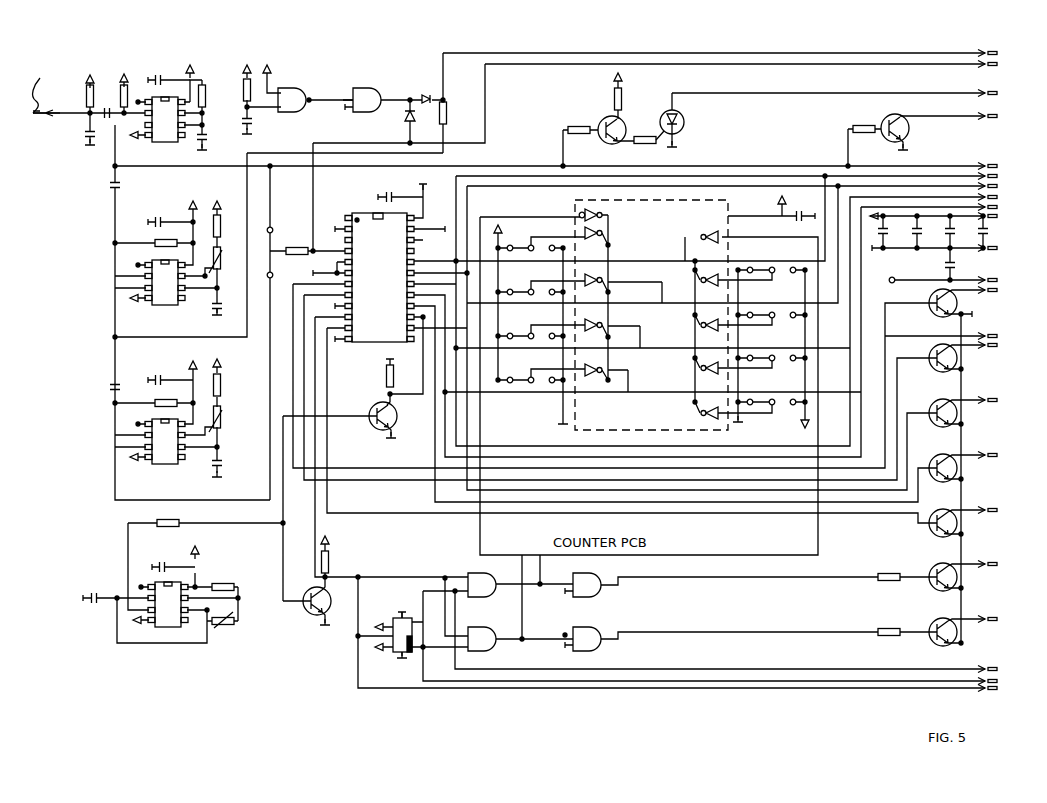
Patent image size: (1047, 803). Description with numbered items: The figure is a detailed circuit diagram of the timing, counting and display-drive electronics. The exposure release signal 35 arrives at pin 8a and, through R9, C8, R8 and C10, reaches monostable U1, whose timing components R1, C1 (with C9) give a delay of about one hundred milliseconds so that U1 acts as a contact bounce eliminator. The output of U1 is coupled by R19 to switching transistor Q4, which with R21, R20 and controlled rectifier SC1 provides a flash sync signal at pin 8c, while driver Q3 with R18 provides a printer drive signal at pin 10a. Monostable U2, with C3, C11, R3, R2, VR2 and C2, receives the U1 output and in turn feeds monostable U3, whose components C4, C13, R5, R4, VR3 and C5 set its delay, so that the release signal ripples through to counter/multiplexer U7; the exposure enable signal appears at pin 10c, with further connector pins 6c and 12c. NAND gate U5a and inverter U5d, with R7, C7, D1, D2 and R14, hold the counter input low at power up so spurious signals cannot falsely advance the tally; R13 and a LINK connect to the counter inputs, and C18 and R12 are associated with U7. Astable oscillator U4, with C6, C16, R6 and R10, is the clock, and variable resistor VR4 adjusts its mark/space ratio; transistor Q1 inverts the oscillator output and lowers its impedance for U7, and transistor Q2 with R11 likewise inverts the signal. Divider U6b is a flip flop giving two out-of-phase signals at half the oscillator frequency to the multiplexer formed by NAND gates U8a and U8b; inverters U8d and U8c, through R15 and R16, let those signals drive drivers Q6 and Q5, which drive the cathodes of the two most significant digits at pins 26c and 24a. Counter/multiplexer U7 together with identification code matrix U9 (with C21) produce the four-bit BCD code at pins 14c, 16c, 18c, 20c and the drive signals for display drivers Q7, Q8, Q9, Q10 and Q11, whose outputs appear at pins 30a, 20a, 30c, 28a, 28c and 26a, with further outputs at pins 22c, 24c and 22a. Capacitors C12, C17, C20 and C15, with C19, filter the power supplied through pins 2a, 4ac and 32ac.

The exposure release signal 35 is at (41, 87).
The exposure release input pin 8a is at (39, 124).
The exposure enable signal pin 10c is at (1003, 53).
The output pin 6c is at (999, 65).
The flash sync signal pin 8c is at (999, 94).
The printer drive signal pin 10a is at (1003, 117).
The connector pin 12c is at (1003, 167).
The BCD code output pin 14c is at (1012, 177).
The BCD code output pin 16c is at (1003, 187).
The BCD code output pin 18c is at (1012, 198).
The BCD code output pin 20c is at (1003, 208).
The power supply pin 2a is at (1010, 217).
The power supply pin 32ac is at (1012, 251).
The power supply pin 4ac is at (1005, 281).
The display driver output pin 30a is at (1006, 292).
The display driver output pin 20a is at (1006, 336).
The display driver output pin 30c is at (1006, 349).
The display driver output pin 28a is at (1006, 402).
The display driver output pin 28c is at (1006, 457).
The display driver output pin 26a is at (1006, 511).
The display driver output pin 26c is at (1006, 566).
The display driver output pin 24a is at (1006, 621).
The output pin 22c is at (1006, 670).
The output pin 24c is at (1006, 683).
The output pin 22a is at (1006, 694).
The monostable U1 is at (165, 119).
The monostable U2 is at (165, 282).
The monostable U3 is at (165, 441).
The astable oscillator U4 is at (168, 604).
The NAND gate U5a is at (292, 102).
The inverter U5d is at (369, 101).
The divider U6b is at (399, 643).
The counter/multiplexer U7 is at (379, 277).
The NAND gate U8a is at (483, 585).
The NAND gate U8b is at (484, 640).
The inverter U8c is at (591, 641).
The inverter U8d is at (589, 585).
The identification code matrix U9 is at (651, 315).
The transistor Q1 is at (379, 424).
The transistor Q2 is at (314, 610).
The driver Q3 is at (908, 128).
The switching transistor Q4 is at (611, 138).
The driver Q5 is at (943, 641).
The driver Q6 is at (943, 586).
The display driver Q7 is at (942, 532).
The display driver Q8 is at (942, 476).
The display driver Q9 is at (942, 421).
The display driver Q10 is at (940, 366).
The display driver Q11 is at (940, 311).
The controlled rectifier SC1 is at (686, 122).
The diode D1 is at (419, 119).
The diode D2 is at (426, 89).
The timing resistor R1 is at (212, 96).
The resistor R2 is at (227, 226).
The resistor R3 is at (155, 250).
The resistor R4 is at (227, 385).
The resistor R5 is at (170, 396).
The resistor R6 is at (223, 581).
The resistor R7 is at (256, 90).
The resistor R8 is at (134, 95).
The resistor R9 is at (79, 97).
The resistor R10 is at (169, 533).
The resistor R11 is at (340, 562).
The resistor R12 is at (405, 376).
The resistor R13 is at (307, 244).
The resistor R14 is at (457, 113).
The resistor R15 is at (890, 569).
The resistor R16 is at (891, 624).
The resistor R18 is at (864, 120).
The resistor R19 is at (580, 122).
The resistor R20 is at (643, 130).
The resistor R21 is at (632, 99).
The variable resistor VR2 is at (231, 261).
The variable resistor VR3 is at (231, 419).
The variable resistor VR4 is at (228, 633).
The timing capacitor C1 is at (211, 138).
The capacitor C2 is at (225, 306).
The capacitor C3 is at (124, 186).
The capacitor C4 is at (124, 388).
The capacitor C5 is at (225, 465).
The capacitor C6 is at (96, 591).
The capacitor C7 is at (256, 128).
The capacitor C8 is at (107, 105).
The capacitor C9 is at (169, 73).
The capacitor C10 is at (78, 133).
The capacitor C11 is at (165, 215).
The filter capacitor C12 is at (893, 238).
The capacitor C13 is at (165, 374).
The filter capacitor C15 is at (993, 238).
The capacitor C16 is at (168, 560).
The filter capacitor C17 is at (927, 238).
The capacitor C18 is at (394, 190).
The capacitor C19 is at (962, 265).
The filter capacitor C20 is at (960, 238).
The capacitor C21 is at (801, 223).
The link LINK is at (291, 265).